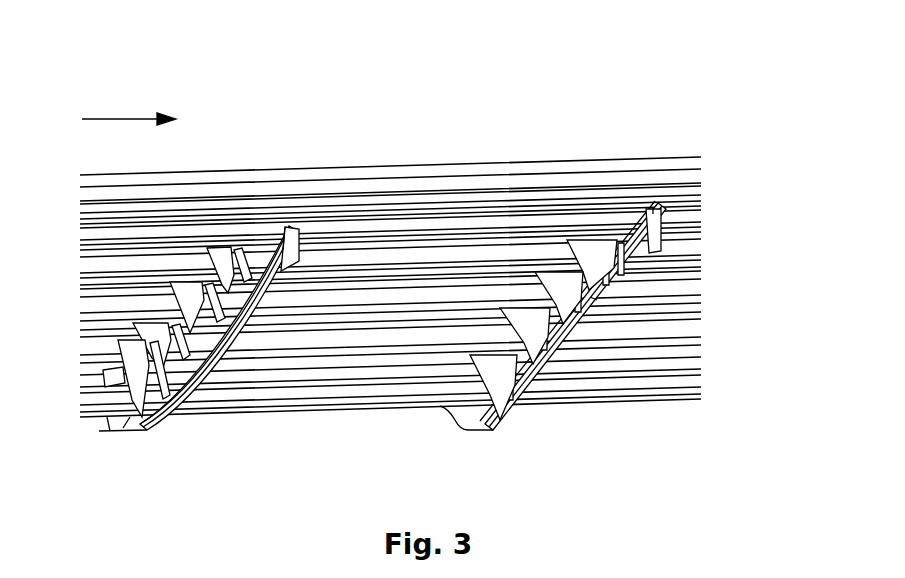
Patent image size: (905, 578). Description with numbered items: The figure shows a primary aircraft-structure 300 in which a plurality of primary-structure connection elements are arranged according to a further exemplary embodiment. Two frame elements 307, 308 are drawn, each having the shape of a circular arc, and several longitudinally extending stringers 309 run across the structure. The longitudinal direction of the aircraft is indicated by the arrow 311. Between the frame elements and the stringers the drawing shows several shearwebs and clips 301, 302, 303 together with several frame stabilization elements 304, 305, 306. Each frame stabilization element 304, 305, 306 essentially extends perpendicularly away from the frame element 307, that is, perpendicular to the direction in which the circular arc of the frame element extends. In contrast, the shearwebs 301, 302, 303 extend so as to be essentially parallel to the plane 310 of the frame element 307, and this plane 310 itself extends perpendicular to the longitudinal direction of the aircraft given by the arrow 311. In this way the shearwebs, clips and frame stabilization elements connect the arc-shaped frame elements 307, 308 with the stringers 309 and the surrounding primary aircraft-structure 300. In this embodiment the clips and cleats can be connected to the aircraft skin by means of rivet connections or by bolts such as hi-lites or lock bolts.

The primary aircraft-structure 300 is at (698, 140).
The shearweb 301 is at (595, 302).
The shearweb 302 is at (557, 322).
The shearweb 303 is at (523, 350).
The frame stabilization element 304 is at (581, 250).
The frame stabilization element 305 is at (550, 282).
The frame stabilization element 306 is at (513, 312).
The frame element 307 is at (655, 226).
The frame element 308 is at (297, 229).
The stringer 309 is at (263, 398).
The plane of the frame element 310 is at (622, 247).
The arrow 311 is at (120, 119).